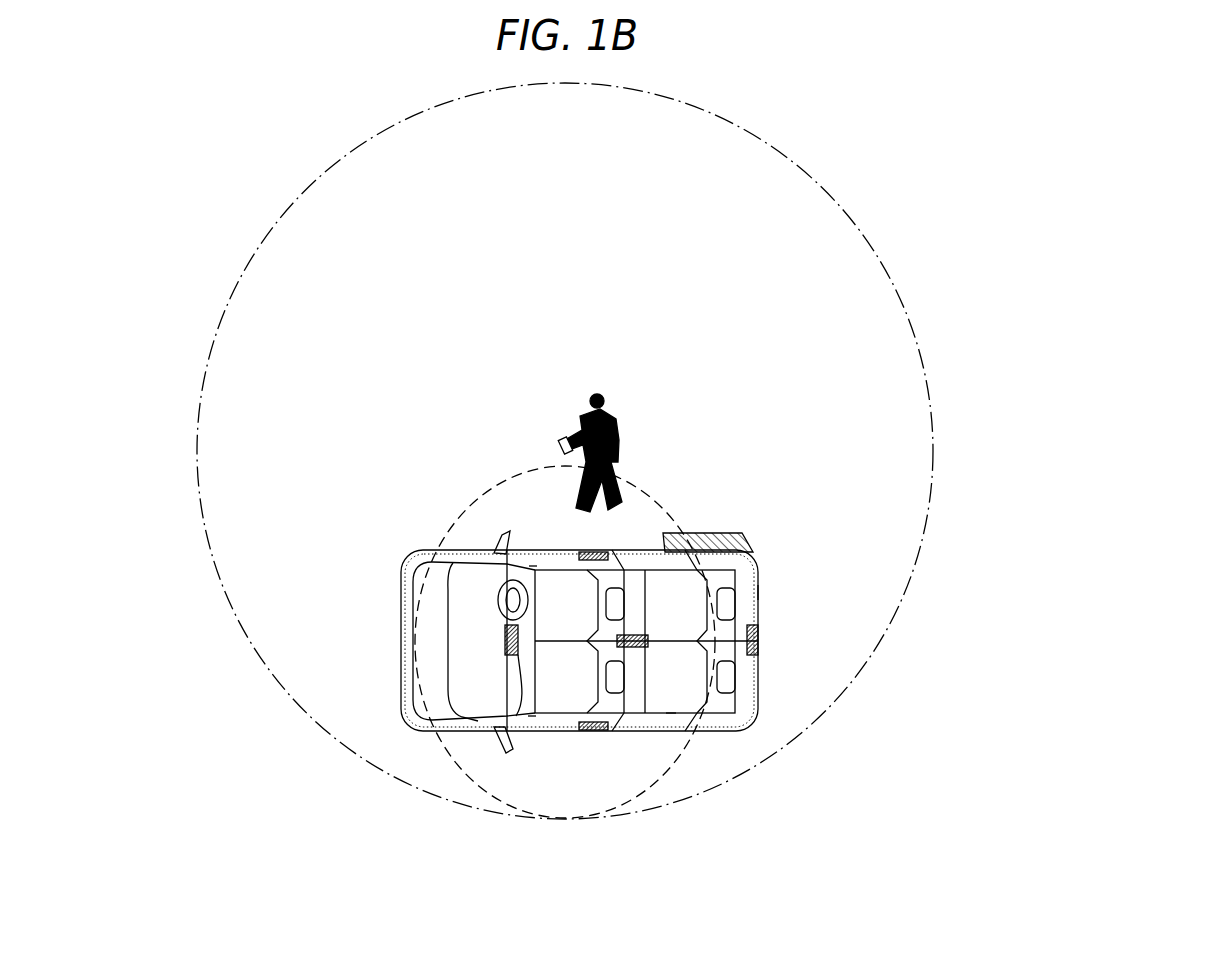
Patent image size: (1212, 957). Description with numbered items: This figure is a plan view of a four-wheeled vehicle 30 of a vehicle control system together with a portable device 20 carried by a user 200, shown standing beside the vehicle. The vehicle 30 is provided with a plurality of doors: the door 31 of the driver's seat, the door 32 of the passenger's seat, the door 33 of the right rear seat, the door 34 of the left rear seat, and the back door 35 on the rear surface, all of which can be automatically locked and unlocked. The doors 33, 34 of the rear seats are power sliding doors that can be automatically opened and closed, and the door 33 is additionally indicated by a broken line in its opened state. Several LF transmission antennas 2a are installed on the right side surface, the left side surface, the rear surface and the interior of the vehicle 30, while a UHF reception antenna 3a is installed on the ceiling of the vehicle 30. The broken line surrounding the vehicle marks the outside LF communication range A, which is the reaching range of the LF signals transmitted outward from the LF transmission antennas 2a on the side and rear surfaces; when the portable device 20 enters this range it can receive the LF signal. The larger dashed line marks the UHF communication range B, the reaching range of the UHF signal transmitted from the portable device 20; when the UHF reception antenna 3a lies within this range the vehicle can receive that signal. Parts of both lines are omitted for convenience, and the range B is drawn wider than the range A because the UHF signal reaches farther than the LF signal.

The portable device 20 is at (568, 437).
The user 200 is at (613, 417).
The LF transmission antenna 2a is at (584, 552).
The UHF reception antenna 3a is at (633, 647).
The vehicle 30 is at (401, 676).
The door of the driver's seat 31 is at (532, 562).
The door of the passenger's seat 32 is at (532, 724).
The door of the right rear seat 33 is at (648, 552).
The door of the left rear seat 34 is at (671, 714).
The back door 35 is at (757, 593).
The outside LF communication range A is at (458, 513).
The UHF communication range B is at (855, 214).